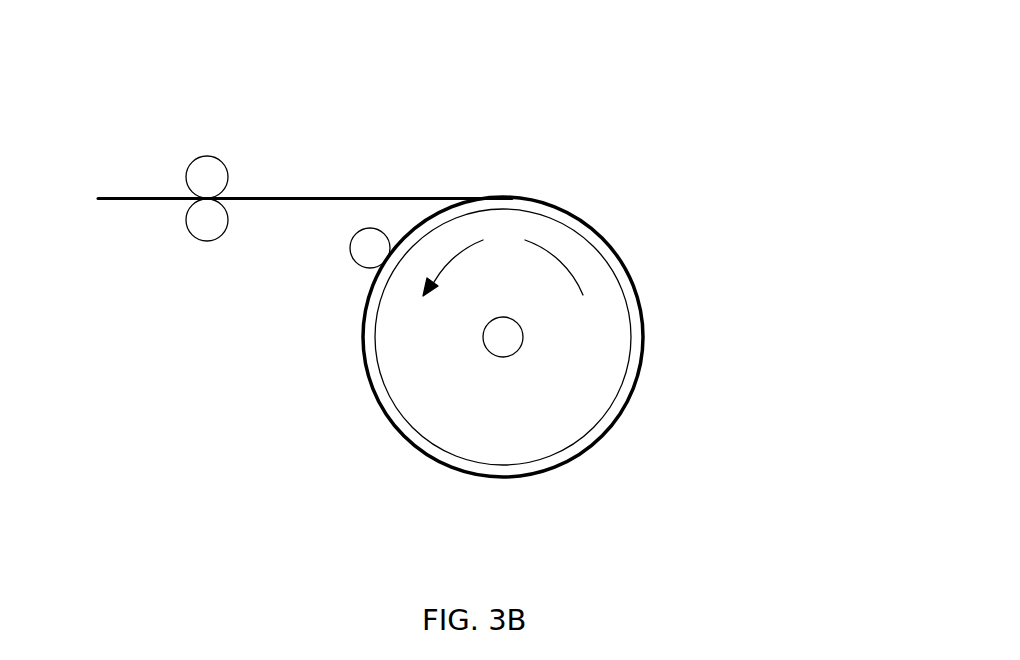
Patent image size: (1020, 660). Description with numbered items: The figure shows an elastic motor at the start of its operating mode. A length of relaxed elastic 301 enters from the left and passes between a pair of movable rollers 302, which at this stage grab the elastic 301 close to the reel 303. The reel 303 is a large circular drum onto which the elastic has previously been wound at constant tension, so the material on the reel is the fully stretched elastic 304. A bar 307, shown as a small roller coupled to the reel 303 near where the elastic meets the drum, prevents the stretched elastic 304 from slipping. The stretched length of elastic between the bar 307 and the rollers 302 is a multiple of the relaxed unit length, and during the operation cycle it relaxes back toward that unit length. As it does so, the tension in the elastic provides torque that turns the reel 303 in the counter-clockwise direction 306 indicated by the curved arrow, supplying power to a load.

The elastic 301 is at (143, 197).
The movable rollers 302 is at (237, 172).
The reel 303 is at (562, 395).
The stretched elastic 304 is at (628, 270).
The counter-clockwise direction 306 is at (503, 259).
The bar 307 is at (350, 242).